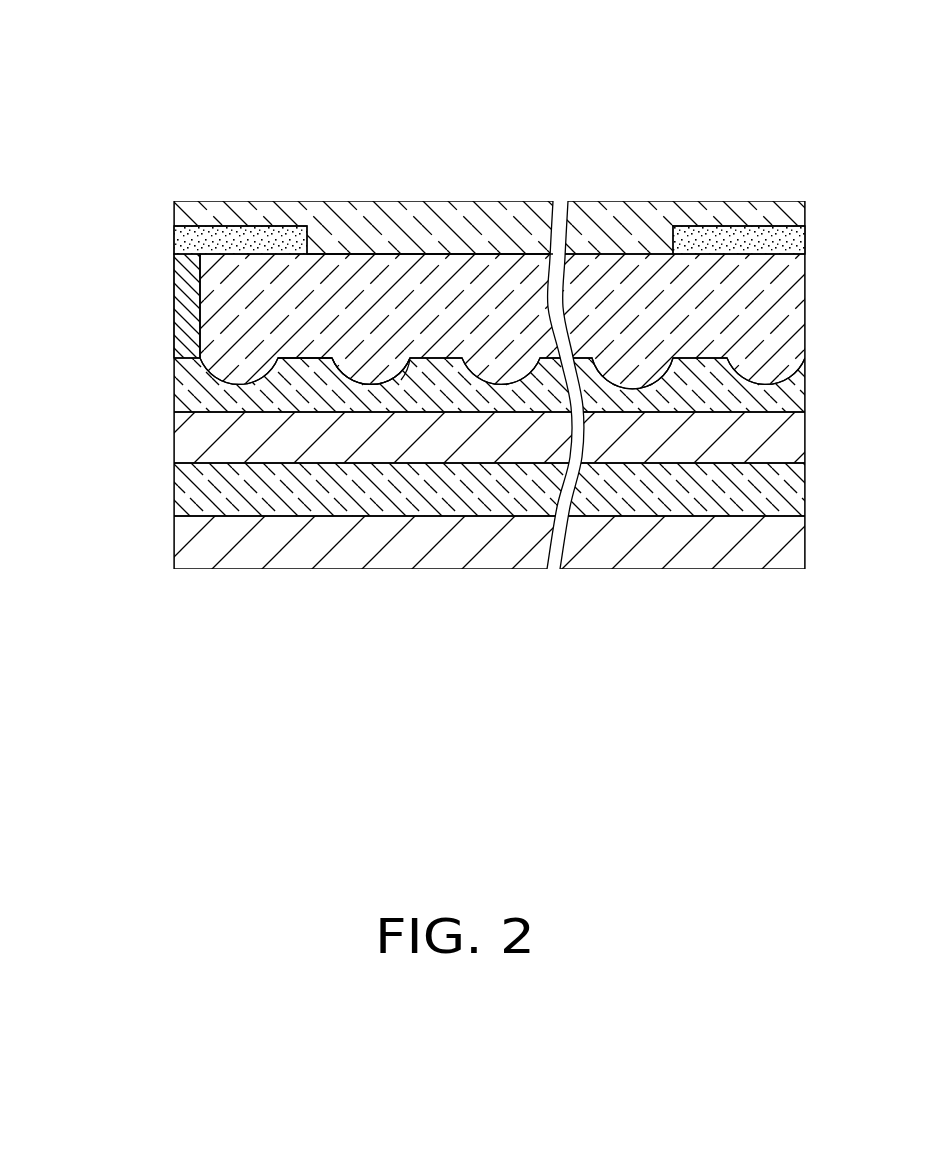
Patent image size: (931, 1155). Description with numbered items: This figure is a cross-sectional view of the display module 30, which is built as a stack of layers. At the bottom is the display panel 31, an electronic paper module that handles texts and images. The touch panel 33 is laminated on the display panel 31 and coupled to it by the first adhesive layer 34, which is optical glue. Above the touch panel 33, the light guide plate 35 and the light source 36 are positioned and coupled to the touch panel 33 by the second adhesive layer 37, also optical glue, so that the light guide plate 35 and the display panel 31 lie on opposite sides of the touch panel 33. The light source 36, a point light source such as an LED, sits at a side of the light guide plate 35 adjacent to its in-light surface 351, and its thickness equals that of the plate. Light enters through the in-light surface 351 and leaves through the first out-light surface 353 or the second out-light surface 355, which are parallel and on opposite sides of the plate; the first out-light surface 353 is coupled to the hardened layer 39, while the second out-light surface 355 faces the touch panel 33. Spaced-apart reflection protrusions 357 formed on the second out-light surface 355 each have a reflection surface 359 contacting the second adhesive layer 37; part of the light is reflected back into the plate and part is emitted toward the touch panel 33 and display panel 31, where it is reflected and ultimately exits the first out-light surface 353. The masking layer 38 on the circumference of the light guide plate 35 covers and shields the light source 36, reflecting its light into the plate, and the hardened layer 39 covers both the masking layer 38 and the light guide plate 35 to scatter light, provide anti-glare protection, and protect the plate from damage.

The display module 30 is at (513, 47).
The display panel 31 is at (193, 553).
The touch panel 33 is at (192, 452).
The first adhesive layer 34 is at (192, 502).
The light guide plate 35 is at (227, 342).
The light source 36 is at (190, 270).
The second adhesive layer 37 is at (193, 394).
The masking layer 38 is at (182, 232).
The hardened layer 39 is at (198, 210).
The in-light surface 351 is at (205, 302).
The first out-light surface 353 is at (410, 253).
The second out-light surface 355 is at (294, 362).
The reflection protrusions 357 is at (371, 374).
The reflection surface 359 is at (412, 382).